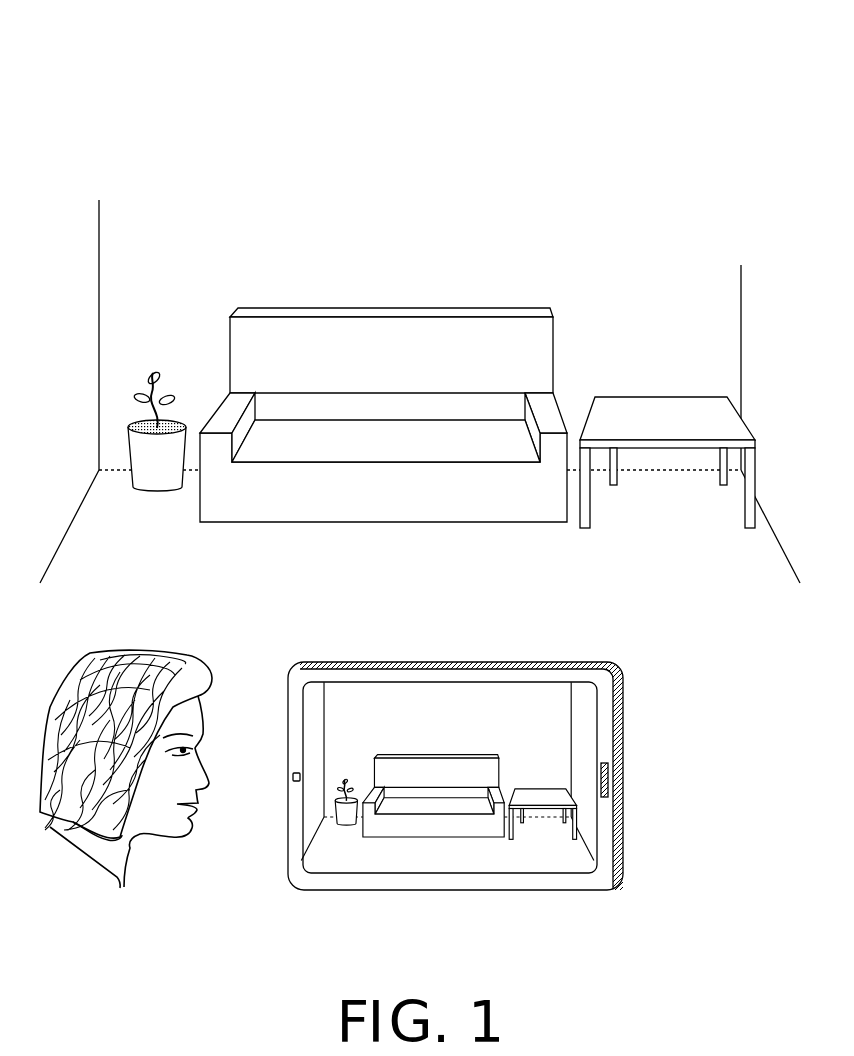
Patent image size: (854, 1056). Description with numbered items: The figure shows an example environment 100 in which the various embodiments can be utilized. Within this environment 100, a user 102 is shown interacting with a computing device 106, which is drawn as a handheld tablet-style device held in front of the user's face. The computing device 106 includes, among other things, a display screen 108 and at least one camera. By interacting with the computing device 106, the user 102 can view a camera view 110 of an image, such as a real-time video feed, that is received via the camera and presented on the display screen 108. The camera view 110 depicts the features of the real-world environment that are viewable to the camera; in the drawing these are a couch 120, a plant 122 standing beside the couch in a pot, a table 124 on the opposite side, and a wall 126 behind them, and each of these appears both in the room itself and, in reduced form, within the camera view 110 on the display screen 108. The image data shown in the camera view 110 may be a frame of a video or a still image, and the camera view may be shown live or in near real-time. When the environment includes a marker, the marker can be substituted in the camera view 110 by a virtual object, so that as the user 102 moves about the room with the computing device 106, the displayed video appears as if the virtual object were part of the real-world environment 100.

The environment 100 is at (81, 77).
The user 102 is at (216, 667).
The computing device 106 is at (416, 661).
The display screen 108 is at (596, 742).
The camera view 110 is at (550, 722).
The couch 120 is at (447, 756).
The plant 122 is at (349, 827).
The table 124 is at (543, 791).
The wall 126 is at (465, 706).